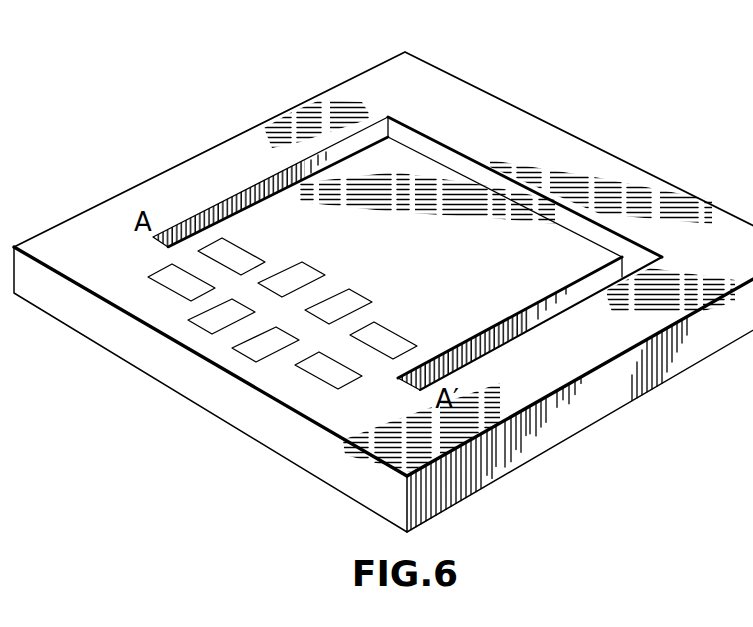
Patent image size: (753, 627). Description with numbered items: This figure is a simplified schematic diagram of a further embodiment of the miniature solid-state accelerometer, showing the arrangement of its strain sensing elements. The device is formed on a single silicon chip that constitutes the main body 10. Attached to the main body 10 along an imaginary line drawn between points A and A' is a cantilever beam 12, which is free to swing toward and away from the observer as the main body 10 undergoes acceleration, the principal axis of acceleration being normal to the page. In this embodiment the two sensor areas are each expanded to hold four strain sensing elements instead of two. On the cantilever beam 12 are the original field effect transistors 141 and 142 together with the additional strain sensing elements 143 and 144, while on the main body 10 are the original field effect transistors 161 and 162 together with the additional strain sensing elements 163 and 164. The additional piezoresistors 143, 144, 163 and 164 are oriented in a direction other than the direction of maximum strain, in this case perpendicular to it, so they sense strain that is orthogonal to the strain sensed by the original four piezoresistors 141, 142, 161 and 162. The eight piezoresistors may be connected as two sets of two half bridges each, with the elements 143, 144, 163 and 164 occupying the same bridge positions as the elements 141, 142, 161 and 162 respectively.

The main body 10 is at (597, 141).
The cantilever beam 12 is at (447, 188).
The field effect transistor 141 is at (306, 274).
The field effect transistor 142 is at (353, 295).
The strain sensing element 143 is at (237, 256).
The strain sensing element 144 is at (390, 338).
The field effect transistor 161 is at (195, 328).
The field effect transistor 162 is at (240, 349).
The strain sensing element 163 is at (170, 281).
The strain sensing element 164 is at (340, 377).